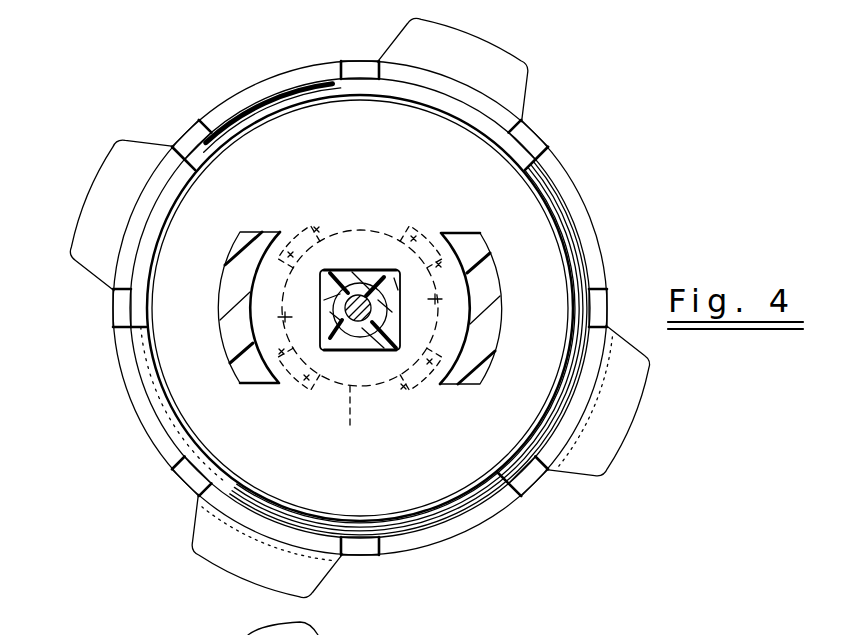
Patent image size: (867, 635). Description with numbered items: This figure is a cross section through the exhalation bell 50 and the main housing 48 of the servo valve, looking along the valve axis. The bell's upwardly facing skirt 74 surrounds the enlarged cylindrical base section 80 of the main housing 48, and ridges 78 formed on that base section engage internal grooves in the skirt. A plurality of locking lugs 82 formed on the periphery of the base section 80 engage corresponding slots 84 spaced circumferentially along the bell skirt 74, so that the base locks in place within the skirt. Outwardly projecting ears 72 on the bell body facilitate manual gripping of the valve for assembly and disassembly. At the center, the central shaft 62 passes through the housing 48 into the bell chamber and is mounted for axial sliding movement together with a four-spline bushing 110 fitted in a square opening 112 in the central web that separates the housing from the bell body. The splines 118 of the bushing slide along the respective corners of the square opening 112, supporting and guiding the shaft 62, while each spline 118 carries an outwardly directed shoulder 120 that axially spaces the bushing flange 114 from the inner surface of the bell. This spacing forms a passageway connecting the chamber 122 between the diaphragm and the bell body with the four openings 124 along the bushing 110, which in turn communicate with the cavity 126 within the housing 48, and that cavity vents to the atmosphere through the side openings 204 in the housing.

The main housing 48 is at (226, 349).
The exhalation bell 50 is at (158, 445).
The central shaft 62 is at (350, 332).
The outwardly projecting ears 72 is at (480, 62).
The upwardly facing skirt 74 is at (252, 86).
The ridges 78 is at (130, 347).
The enlarged cylindrical base section 80 is at (543, 243).
The locking lugs 82 is at (536, 143).
The slots 84 is at (346, 62).
The four-spline bushing 110 is at (362, 288).
The square opening 112 is at (353, 267).
The flange 114 is at (353, 415).
The splines 118 is at (400, 294).
The outwardly directed shoulder 120 is at (402, 260).
The chamber 122 is at (318, 296).
The openings 124 is at (380, 262).
The cavity 126 is at (300, 272).
The side openings 204 is at (428, 235).